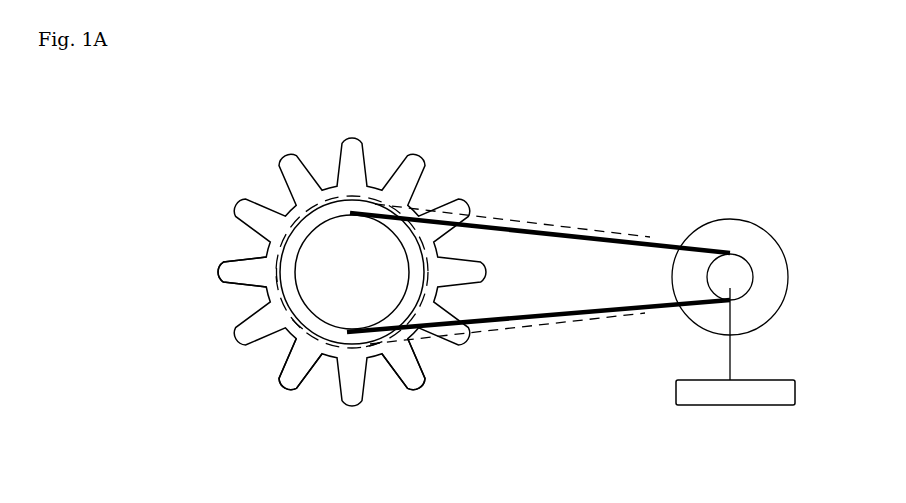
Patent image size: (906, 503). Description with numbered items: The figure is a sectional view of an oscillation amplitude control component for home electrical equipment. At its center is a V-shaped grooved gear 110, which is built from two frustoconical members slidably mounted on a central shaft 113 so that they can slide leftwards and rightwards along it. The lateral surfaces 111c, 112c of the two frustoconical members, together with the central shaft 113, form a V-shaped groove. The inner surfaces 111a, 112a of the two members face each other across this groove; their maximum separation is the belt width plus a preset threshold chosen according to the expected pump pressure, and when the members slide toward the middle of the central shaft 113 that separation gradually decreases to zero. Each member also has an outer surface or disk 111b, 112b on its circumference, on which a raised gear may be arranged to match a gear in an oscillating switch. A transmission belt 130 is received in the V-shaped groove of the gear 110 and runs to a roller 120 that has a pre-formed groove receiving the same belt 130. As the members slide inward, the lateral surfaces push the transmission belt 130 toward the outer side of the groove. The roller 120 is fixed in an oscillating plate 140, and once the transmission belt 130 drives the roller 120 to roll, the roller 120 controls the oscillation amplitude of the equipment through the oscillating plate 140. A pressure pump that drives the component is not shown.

The V-shaped grooved gear 110 is at (282, 168).
The inner surface of the first frustoconical member 111a is at (294, 316).
The inner surface of the second frustoconical member 112a is at (241, 385).
The outer surface or disk of the first frustoconical member 111b is at (380, 358).
The outer surface or disk of the second frustoconical member 112b is at (423, 403).
The lateral surface of the first frustoconical member 111c is at (277, 256).
The lateral surface of the second frustoconical member 112c is at (201, 248).
The central shaft 113 is at (368, 284).
The roller 120 is at (747, 249).
The transmission belt 130 is at (588, 233).
The oscillating plate 140 is at (767, 382).